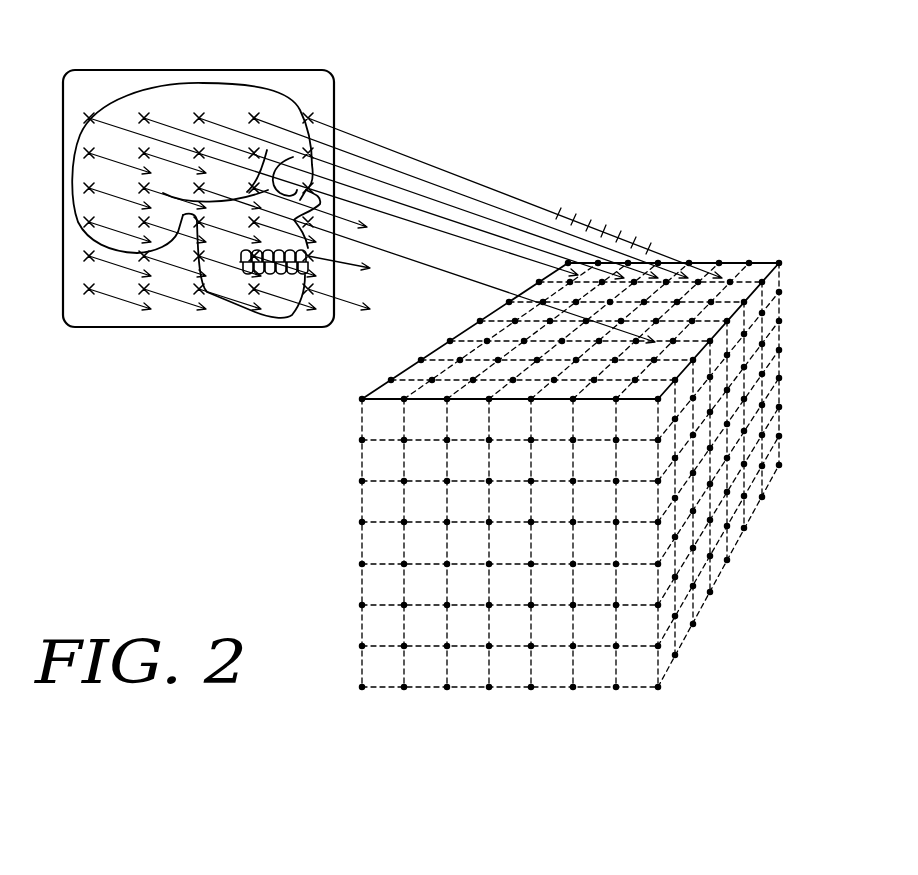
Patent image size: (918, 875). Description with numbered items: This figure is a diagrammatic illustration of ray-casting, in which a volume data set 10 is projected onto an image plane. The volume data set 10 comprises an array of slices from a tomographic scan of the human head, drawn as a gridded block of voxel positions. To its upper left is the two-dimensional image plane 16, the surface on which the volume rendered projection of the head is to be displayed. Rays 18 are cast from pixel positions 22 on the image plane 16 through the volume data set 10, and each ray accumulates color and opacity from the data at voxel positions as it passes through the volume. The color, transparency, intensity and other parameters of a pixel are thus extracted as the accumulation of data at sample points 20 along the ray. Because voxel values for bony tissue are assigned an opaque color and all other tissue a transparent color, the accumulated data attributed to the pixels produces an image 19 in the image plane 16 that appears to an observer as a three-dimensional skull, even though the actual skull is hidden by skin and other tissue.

The volume data set 10 is at (746, 554).
The image plane 16 is at (147, 61).
The rays 18 is at (463, 176).
The image 19 is at (231, 80).
The sample points 20 is at (592, 227).
The pixel positions 22 is at (340, 135).